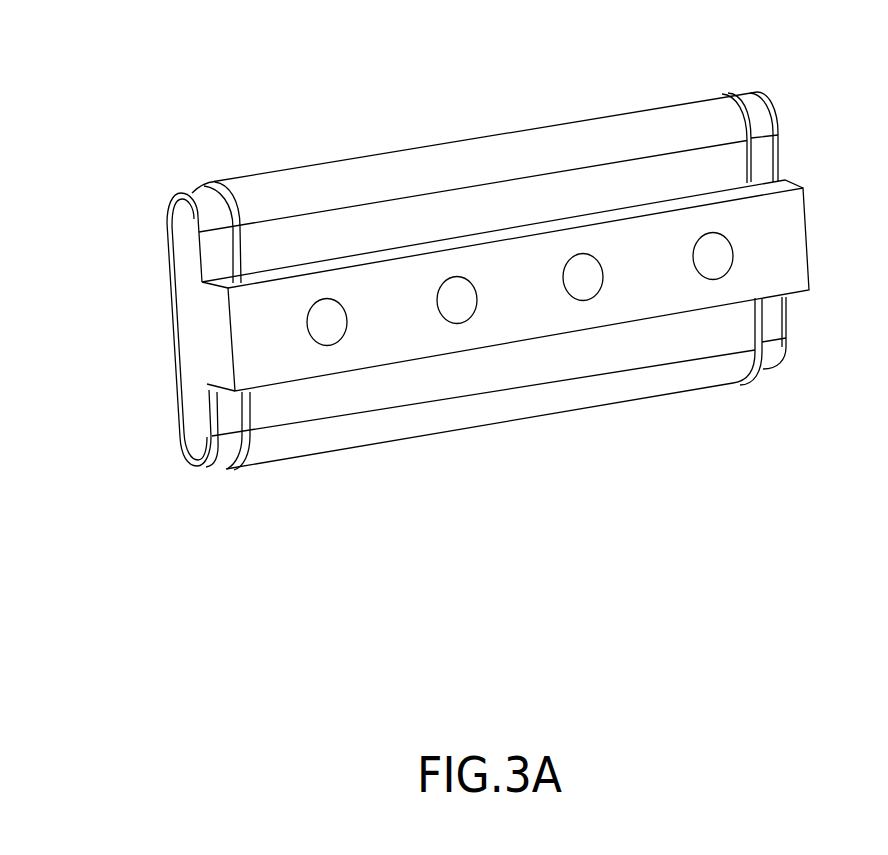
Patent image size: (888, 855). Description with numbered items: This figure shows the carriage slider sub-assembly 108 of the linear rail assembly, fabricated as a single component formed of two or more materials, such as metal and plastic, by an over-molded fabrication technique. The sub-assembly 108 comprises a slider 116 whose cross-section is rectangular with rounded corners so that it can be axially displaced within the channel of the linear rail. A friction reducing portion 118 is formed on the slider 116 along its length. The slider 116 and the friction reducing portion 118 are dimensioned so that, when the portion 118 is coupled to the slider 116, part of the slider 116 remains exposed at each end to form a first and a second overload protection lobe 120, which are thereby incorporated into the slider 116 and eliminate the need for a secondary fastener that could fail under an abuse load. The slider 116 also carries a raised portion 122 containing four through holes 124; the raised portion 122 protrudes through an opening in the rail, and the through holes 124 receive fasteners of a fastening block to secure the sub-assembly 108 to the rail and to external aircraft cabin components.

The carriage slider sub-assembly 108 is at (90, 72).
The slider 116 is at (789, 62).
The friction reducing portion 118 is at (455, 157).
The overload protection lobe 120 is at (201, 190).
The raised portion 122 is at (278, 363).
The through holes 124 is at (716, 262).